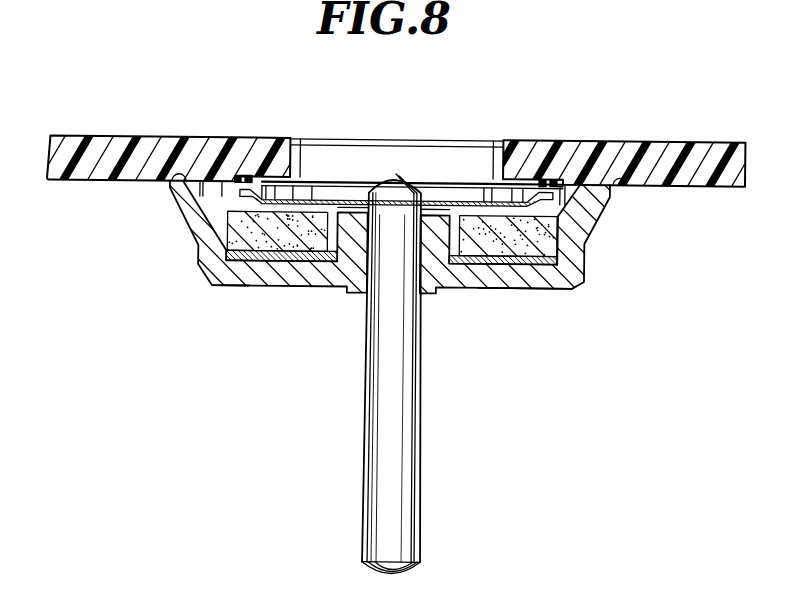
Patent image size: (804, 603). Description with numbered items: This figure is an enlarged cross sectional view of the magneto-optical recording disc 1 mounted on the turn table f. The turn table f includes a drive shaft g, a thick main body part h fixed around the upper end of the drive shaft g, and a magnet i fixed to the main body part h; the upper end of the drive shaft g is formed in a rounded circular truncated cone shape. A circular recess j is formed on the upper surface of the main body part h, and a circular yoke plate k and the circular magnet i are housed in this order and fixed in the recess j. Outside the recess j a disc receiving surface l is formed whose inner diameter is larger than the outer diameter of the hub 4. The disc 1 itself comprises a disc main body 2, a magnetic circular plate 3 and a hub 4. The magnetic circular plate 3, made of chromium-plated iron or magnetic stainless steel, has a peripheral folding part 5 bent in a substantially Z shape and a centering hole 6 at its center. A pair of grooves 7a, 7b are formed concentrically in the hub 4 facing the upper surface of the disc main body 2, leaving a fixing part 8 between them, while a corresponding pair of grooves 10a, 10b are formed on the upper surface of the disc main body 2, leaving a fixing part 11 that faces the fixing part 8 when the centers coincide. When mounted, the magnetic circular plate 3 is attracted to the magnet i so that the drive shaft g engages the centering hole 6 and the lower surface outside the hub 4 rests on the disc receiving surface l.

The magneto-optical recording disc 1 is at (654, 83).
The disc main body 2 is at (676, 145).
The magnetic circular plate 3 is at (440, 201).
The hub 4 is at (587, 233).
The folding part 5 is at (238, 197).
The centering hole 6 is at (382, 208).
The groove 7a is at (243, 177).
The groove 7b is at (255, 177).
The fixing part 8 is at (247, 177).
The groove 10a is at (563, 180).
The groove 10b is at (546, 178).
The fixing part 11 is at (538, 178).
The turn table f is at (228, 288).
The drive shaft g is at (424, 410).
The thick main body part h is at (528, 288).
The magnet i is at (545, 253).
The circular recess j is at (286, 258).
The yoke plate k is at (492, 261).
The disc receiving surface l is at (174, 181).